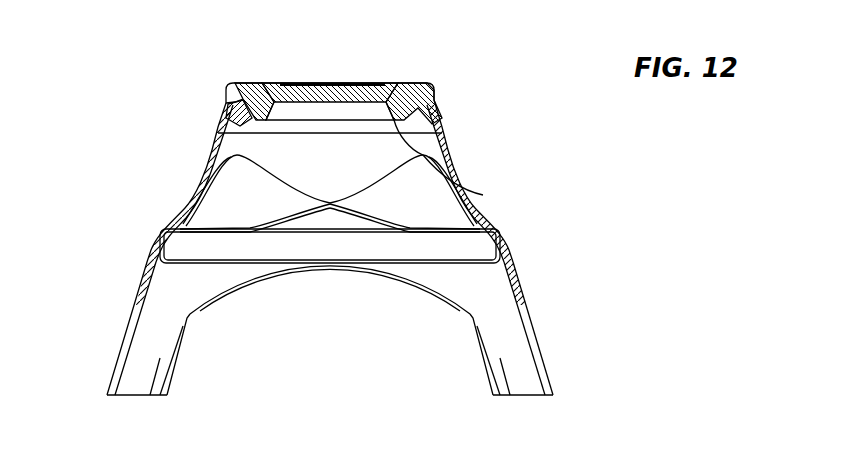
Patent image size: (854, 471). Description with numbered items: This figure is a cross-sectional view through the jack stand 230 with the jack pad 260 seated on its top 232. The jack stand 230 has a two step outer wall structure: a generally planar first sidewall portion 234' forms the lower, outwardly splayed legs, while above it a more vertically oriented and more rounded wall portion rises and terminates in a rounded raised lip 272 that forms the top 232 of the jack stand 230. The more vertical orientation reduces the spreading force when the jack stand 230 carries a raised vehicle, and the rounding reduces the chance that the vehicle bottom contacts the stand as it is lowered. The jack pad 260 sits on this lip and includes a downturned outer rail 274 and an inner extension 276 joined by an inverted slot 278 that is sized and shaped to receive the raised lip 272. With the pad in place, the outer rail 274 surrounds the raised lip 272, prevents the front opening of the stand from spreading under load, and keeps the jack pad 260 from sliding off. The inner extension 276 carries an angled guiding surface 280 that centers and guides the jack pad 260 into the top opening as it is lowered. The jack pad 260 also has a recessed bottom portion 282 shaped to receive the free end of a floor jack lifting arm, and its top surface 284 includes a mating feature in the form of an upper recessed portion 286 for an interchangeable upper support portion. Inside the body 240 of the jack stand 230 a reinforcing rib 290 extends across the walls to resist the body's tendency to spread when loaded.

The jack stand 230 is at (560, 166).
The top 232 is at (238, 97).
The first sidewall portion 234' is at (529, 328).
The body 240 is at (160, 164).
The jack pad 260 is at (397, 82).
The raised lip 272 is at (436, 90).
The downturned outer rail 274 is at (225, 94).
The inner extension 276 is at (266, 120).
The inverted slot 278 is at (233, 87).
The angled guiding surface 280 is at (218, 133).
The recessed bottom portion 282 is at (337, 108).
The top surface 284 is at (258, 82).
The upper recessed portion 286 is at (345, 82).
The reinforcing rib 290 is at (332, 243).